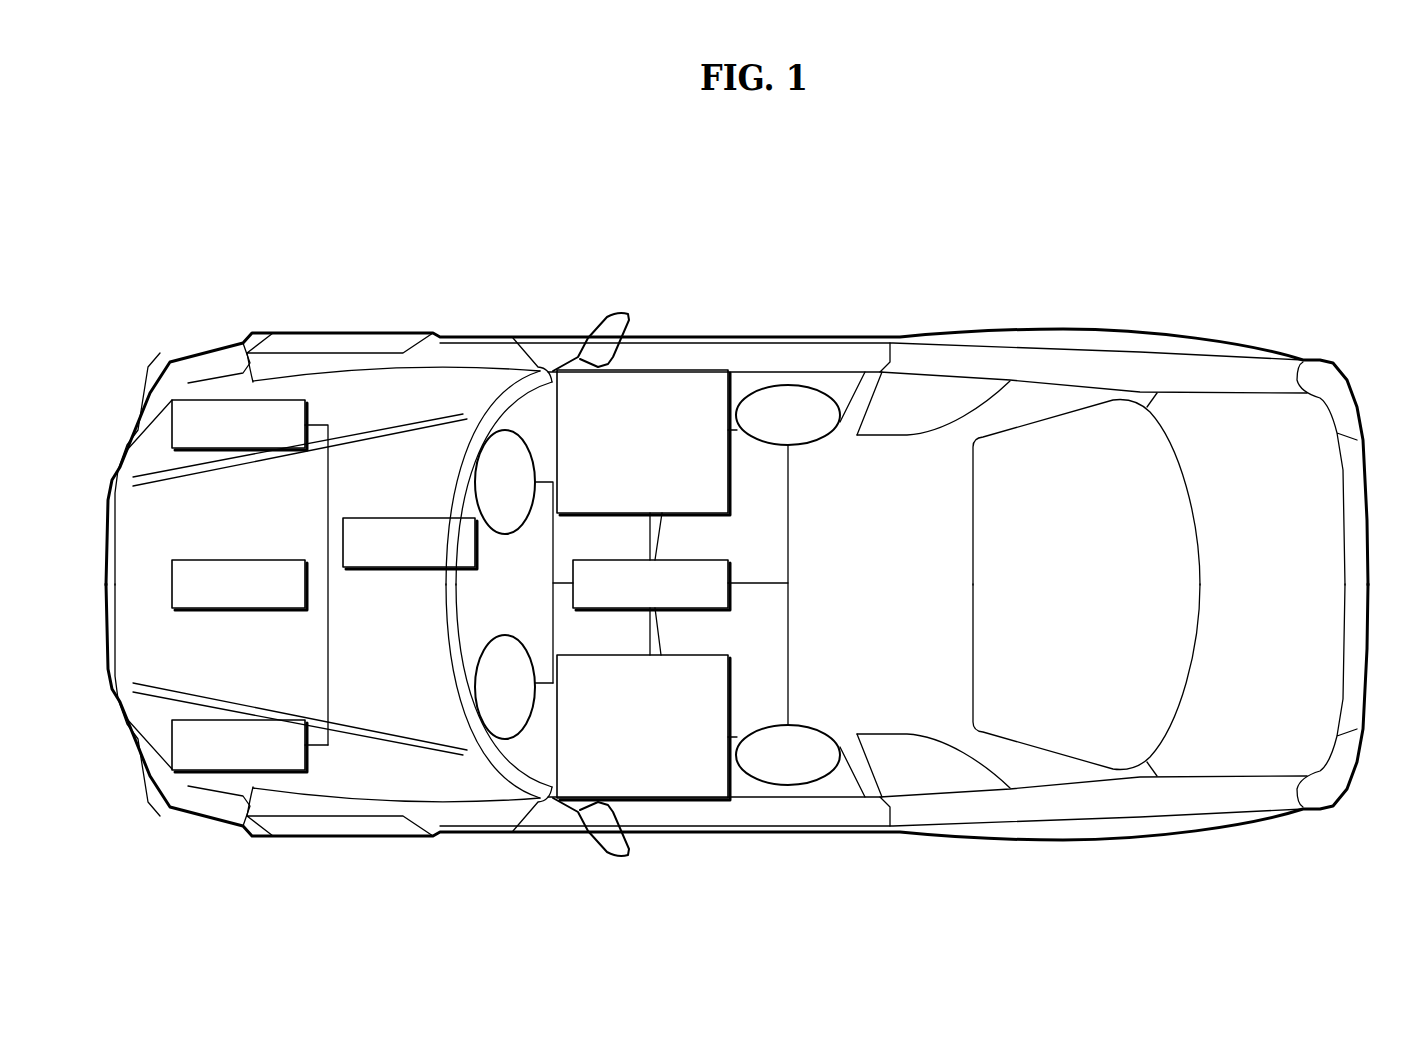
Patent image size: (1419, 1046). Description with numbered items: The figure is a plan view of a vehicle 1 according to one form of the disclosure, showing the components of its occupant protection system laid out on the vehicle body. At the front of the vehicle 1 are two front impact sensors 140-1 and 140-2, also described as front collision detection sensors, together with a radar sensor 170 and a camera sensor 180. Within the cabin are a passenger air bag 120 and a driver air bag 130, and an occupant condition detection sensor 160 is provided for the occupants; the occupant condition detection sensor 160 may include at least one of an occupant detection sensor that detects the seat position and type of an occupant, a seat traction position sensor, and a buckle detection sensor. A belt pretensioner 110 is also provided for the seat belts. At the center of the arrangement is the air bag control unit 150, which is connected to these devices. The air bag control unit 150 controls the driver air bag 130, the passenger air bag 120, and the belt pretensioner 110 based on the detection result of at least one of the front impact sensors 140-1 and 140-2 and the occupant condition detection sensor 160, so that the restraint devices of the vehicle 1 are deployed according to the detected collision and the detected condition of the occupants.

The vehicle 1 is at (951, 257).
The belt pretensioner 110 is at (814, 725).
The passenger air bag 120 is at (509, 431).
The driver air bag 130 is at (503, 635).
The front impact sensor 140-1 is at (305, 768).
The front impact sensor 140-2 is at (305, 402).
The air bag control unit 150 is at (703, 560).
The occupant condition detection sensor 160 is at (690, 370).
The radar sensor 170 is at (279, 560).
The camera sensor 180 is at (409, 518).